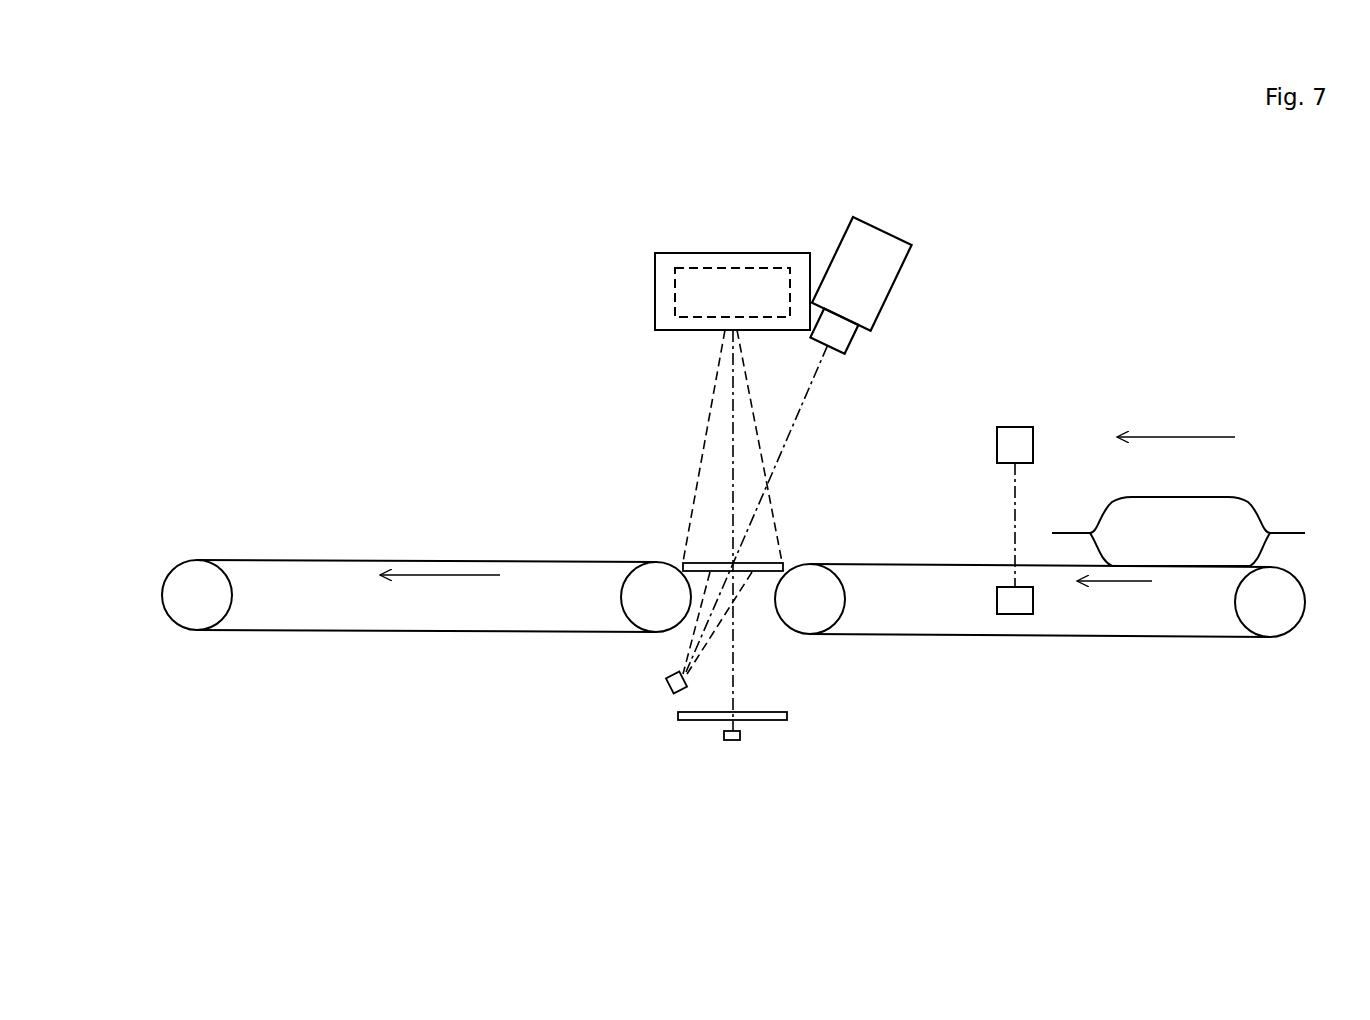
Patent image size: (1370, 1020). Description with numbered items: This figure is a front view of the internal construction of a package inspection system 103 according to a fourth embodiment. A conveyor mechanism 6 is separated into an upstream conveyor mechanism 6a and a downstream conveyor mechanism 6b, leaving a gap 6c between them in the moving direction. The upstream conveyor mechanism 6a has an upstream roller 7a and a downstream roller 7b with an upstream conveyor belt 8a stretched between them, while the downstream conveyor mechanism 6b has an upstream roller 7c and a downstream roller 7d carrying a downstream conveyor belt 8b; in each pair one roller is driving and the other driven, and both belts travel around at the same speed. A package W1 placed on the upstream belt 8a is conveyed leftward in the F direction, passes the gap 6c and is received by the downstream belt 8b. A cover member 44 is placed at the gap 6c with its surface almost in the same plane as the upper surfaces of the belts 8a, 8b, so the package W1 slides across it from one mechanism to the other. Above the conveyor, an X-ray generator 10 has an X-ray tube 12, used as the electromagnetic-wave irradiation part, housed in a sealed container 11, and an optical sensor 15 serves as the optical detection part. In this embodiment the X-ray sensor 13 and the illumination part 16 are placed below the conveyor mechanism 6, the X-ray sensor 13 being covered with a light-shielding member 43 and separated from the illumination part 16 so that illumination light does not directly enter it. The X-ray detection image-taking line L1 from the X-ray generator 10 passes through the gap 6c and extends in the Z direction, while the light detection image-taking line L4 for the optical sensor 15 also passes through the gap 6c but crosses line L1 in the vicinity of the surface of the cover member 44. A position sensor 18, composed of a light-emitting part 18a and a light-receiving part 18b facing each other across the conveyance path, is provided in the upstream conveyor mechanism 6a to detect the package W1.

The inspection system 103 is at (505, 252).
The X-ray generator 10 is at (687, 250).
The sealed container 11 is at (655, 302).
The X-ray tube 12 is at (750, 290).
The optical sensor 15 is at (870, 282).
The X-ray detection image-taking line L1 is at (733, 473).
The light detection image-taking line L4 is at (800, 415).
The cover member 44 is at (777, 548).
The light-shielding member 43 is at (695, 725).
The X-ray sensor 13 is at (745, 735).
The illumination part 16 is at (672, 688).
The conveyor mechanism 6 is at (480, 638).
The upstream conveyor mechanism 6a is at (927, 640).
The downstream conveyor mechanism 6b is at (352, 638).
The gap 6c is at (752, 615).
The upstream roller 7a is at (1270, 620).
The downstream roller 7b is at (828, 598).
The upstream roller 7c is at (645, 612).
The downstream roller 7d is at (197, 612).
The upstream conveyor belt 8a is at (1090, 638).
The downstream conveyor belt 8b is at (295, 560).
The position sensor 18 is at (1045, 432).
The light-emitting part 18a is at (1015, 440).
The light-receiving part 18b is at (1020, 603).
The package W1 is at (1220, 520).
The F direction F is at (1176, 418).